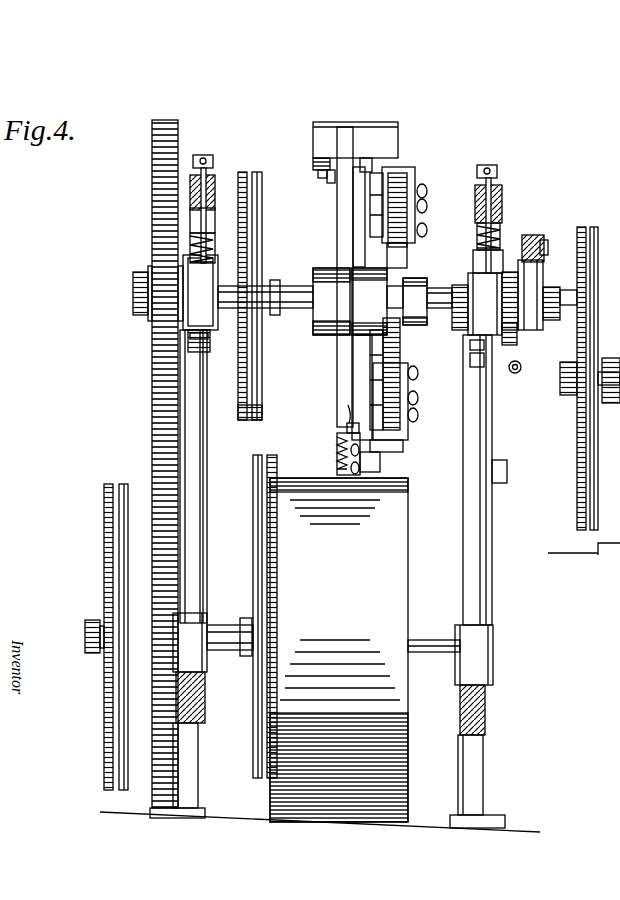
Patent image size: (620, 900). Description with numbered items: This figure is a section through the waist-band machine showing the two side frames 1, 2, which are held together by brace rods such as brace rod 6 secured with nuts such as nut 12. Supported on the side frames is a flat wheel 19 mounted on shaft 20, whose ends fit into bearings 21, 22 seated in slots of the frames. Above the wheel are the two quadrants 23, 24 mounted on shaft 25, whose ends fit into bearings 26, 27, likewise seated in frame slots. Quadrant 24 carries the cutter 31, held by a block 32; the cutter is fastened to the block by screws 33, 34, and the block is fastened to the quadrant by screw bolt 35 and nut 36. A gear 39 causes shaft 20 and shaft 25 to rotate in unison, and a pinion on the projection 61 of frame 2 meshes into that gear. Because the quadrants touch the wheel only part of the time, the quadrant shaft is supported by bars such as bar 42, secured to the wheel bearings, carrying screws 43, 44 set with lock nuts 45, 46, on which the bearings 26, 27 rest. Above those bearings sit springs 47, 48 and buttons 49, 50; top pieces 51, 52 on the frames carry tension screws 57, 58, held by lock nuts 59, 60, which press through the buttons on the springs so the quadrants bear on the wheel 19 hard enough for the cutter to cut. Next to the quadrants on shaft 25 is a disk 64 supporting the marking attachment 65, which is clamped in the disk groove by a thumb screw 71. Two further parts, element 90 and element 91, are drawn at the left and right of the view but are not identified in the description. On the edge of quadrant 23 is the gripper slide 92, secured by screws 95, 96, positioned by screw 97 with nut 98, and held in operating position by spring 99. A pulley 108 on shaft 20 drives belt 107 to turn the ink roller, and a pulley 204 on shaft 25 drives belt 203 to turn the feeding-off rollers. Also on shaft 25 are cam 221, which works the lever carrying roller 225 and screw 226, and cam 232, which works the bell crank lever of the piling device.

The side frame 1 is at (483, 775).
The side frame 2 is at (415, 116).
The brace rod 6 is at (596, 272).
The nut 12 is at (609, 426).
The flat wheel 19 is at (392, 597).
The shaft 20 is at (437, 640).
The bearing 21 is at (495, 679).
The bearing 22 is at (200, 632).
The quadrant 23 is at (369, 354).
The quadrant 24 is at (331, 301).
The shaft 25 is at (287, 288).
The bearing 26 is at (470, 283).
The bearing 27 is at (202, 282).
The cutter 31 is at (352, 122).
The block 32 is at (313, 150).
The screw 33 is at (318, 168).
The screw 34 is at (374, 162).
The screw bolt 35 is at (327, 178).
The nut 36 is at (350, 182).
The gear 39 is at (152, 483).
The bar 42 is at (200, 515).
The screw 43 is at (472, 345).
The screw 44 is at (215, 340).
The lock nut 45 is at (472, 360).
The lock nut 46 is at (190, 352).
The spring 47 is at (505, 265).
The spring 48 is at (183, 256).
The button 49 is at (505, 245).
The button 50 is at (206, 238).
The top piece 51 is at (505, 205).
The top piece 52 is at (213, 182).
The tension screw 57 is at (498, 166).
The tension screw 58 is at (206, 158).
The lock nut 59 is at (477, 226).
The lock nut 60 is at (195, 212).
The projection 61 is at (95, 688).
The disk 64 is at (400, 283).
The marking attachment 65 is at (412, 178).
The thumb screw 71 is at (428, 230).
The gear 90 is at (152, 236).
The column 91 is at (480, 555).
The slide 92 is at (337, 470).
The screw 95 is at (372, 470).
The screw 96 is at (394, 453).
The screw 97 is at (350, 425).
The nut 98 is at (345, 432).
The spring 99 is at (338, 450).
The belt 107 is at (262, 492).
The pulley 108 is at (250, 695).
The belt 203 is at (248, 415).
The pulley 204 is at (252, 380).
The cam 221 is at (540, 283).
The roller 225 is at (540, 235).
The screw 226 is at (547, 246).
The cam 232 is at (517, 336).